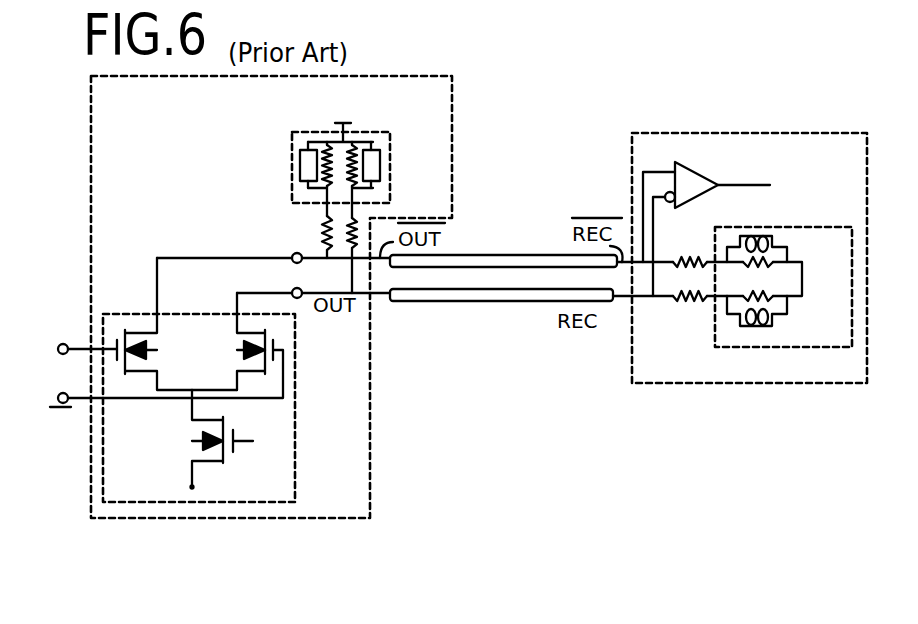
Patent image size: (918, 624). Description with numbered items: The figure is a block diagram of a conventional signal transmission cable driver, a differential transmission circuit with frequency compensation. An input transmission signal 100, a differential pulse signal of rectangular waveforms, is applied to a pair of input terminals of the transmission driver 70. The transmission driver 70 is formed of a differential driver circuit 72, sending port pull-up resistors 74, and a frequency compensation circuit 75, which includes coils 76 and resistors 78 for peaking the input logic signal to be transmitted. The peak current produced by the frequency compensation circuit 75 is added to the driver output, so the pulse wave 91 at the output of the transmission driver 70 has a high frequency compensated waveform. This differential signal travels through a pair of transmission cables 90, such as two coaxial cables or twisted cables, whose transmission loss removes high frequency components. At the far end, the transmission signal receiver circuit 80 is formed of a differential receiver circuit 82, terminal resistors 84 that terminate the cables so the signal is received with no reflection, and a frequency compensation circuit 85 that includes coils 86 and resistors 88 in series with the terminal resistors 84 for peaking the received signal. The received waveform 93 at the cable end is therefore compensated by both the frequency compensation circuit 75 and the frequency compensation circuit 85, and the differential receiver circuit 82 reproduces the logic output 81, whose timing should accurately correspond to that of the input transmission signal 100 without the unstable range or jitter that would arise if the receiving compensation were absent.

The transmission driver 70 is at (363, 455).
The differential driver circuit 72 is at (141, 313).
The sending port pull-up resistors 74 is at (348, 224).
The frequency compensation circuit 75 is at (331, 155).
The coils 76 is at (299, 160).
The resistors 78 is at (323, 141).
The transmission signal receiver circuit 80 is at (740, 277).
The logic waveform 81out 81 is at (738, 185).
The differential receiver circuit 82 is at (695, 167).
The terminal resistors 84 is at (700, 273).
The frequency compensation circuit 85 is at (715, 318).
The coils 86 is at (760, 233).
The resistors 88 is at (757, 273).
The transmission cables 90 is at (460, 266).
The pulse wave 91WAV 91 is at (384, 283).
The waveform 93WAV 93 is at (621, 283).
The input transmission signal 100 is at (50, 396).